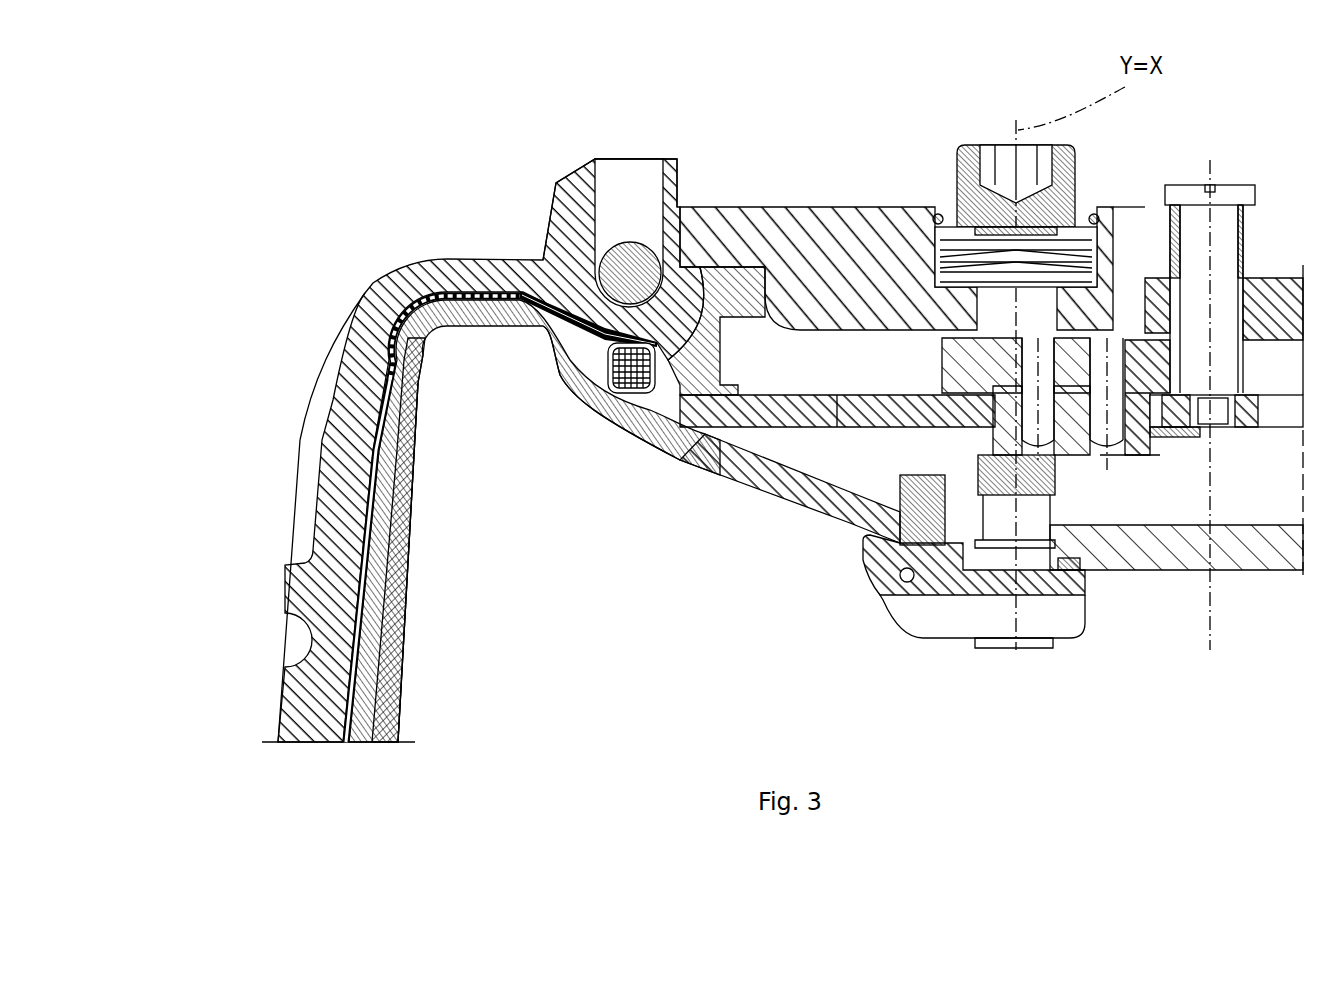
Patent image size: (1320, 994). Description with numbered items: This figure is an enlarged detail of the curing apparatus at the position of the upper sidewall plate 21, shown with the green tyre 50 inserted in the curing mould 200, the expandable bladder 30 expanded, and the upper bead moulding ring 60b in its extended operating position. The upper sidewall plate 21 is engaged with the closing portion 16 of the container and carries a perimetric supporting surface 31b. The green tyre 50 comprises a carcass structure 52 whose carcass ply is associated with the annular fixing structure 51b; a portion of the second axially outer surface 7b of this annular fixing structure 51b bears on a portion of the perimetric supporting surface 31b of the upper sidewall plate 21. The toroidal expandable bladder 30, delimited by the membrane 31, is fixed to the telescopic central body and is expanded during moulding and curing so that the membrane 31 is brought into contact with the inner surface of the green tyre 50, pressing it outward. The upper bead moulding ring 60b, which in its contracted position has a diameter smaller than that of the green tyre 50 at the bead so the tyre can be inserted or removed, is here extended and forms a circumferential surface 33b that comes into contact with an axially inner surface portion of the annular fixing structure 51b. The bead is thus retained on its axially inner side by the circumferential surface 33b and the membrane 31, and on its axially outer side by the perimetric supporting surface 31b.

The upper sidewall plate 21 is at (668, 340).
The curing mould 200 is at (856, 190).
The closing portion 16 is at (1141, 187).
The annular fixing structure 51b is at (522, 262).
The perimetric supporting surface 31b is at (668, 385).
The second axially outer surface 7b is at (593, 432).
The circumferential surface 33b is at (645, 455).
The upper bead moulding ring 60b is at (762, 438).
The green tyre 50 is at (275, 553).
The carcass structure 52 is at (325, 610).
The expandable bladder 30 is at (544, 694).
The membrane 31 is at (405, 712).